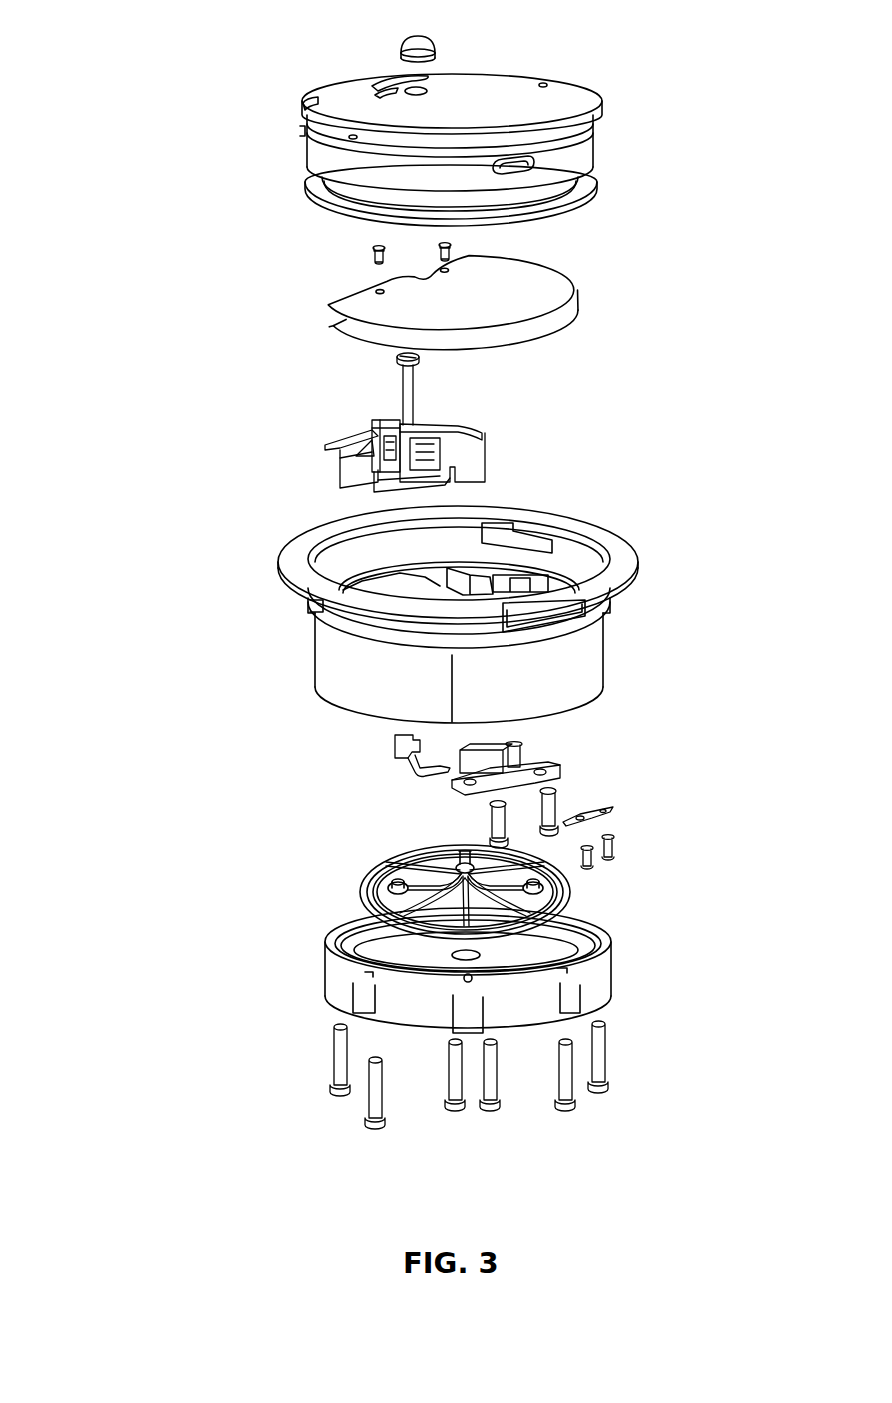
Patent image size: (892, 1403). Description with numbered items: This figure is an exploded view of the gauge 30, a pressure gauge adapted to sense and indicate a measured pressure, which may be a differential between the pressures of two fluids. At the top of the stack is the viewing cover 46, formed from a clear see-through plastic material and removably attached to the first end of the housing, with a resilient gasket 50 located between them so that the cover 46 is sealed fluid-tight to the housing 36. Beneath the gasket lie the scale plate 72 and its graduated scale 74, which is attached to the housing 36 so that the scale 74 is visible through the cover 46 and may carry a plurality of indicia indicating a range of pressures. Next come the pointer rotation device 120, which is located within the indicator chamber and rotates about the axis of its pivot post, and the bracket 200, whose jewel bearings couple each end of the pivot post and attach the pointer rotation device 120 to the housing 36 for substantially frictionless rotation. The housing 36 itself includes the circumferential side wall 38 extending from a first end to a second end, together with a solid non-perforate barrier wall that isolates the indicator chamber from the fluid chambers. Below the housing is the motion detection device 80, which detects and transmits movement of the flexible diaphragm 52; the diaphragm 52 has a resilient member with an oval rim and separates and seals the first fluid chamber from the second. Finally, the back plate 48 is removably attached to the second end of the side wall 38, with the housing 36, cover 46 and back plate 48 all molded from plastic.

The gauge 30 is at (183, 40).
The viewing cover 46 is at (302, 110).
The resilient gasket 50 is at (308, 183).
The graduated scale 74 is at (330, 303).
The scale plate 72 is at (330, 327).
The pointer rotation device 120 is at (372, 422).
The bracket 200 is at (328, 447).
The housing 36 is at (283, 560).
The circumferential side wall 38 is at (357, 685).
The motion detection device 80 is at (393, 740).
The flexible diaphragm 52 is at (357, 897).
The back plate 48 is at (325, 965).